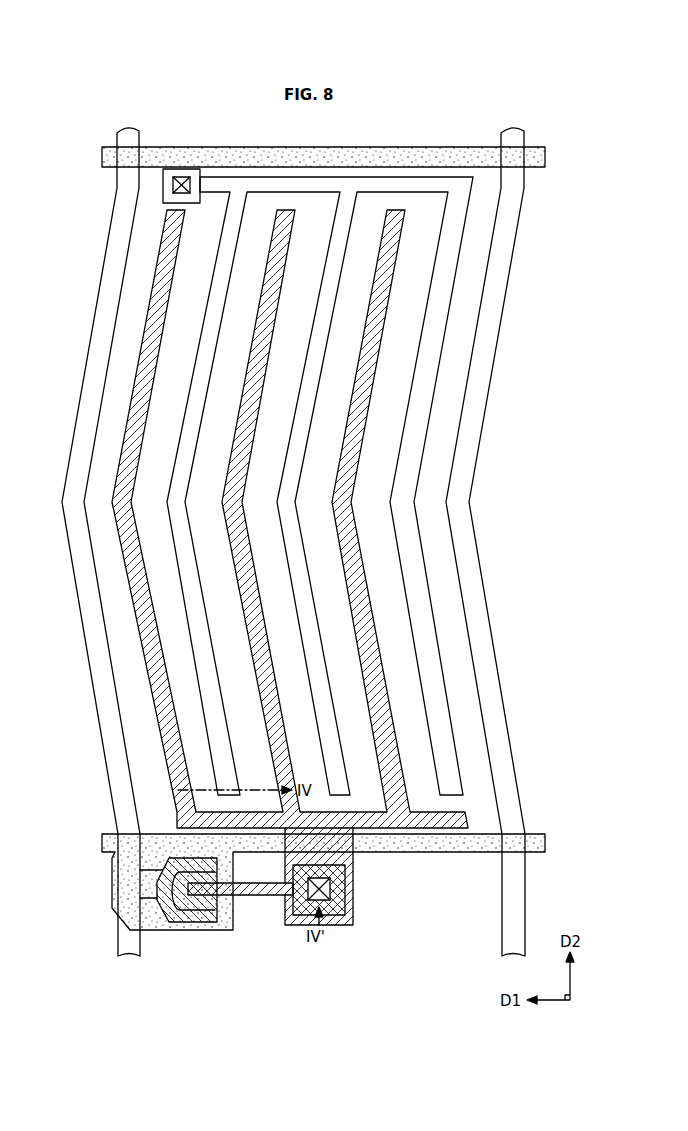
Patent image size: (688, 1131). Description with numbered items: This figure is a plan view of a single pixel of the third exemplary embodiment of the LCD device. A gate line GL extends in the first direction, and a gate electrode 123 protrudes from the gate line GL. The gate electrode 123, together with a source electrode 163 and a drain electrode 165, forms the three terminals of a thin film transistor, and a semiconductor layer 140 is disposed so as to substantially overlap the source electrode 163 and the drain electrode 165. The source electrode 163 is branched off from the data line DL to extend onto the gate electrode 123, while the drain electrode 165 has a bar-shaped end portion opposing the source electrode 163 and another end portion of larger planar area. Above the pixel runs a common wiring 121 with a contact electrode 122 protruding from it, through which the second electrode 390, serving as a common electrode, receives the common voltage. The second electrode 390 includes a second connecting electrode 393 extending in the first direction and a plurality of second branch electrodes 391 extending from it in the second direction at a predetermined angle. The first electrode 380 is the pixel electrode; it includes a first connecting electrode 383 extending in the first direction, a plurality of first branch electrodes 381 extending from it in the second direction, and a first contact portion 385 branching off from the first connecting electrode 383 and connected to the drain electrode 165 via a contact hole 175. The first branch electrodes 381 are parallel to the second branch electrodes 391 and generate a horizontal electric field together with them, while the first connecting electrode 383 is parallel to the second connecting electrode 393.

The common wiring 121 is at (102, 156).
The contact electrode 122 is at (163, 186).
The gate electrode 123 is at (112, 885).
The semiconductor layer 140 is at (187, 914).
The source electrode 163 is at (166, 869).
The drain electrode 165 is at (204, 903).
The contact hole 175 is at (332, 926).
The first electrode 380 is at (371, 567).
The first branch electrodes 381 is at (395, 738).
The first connecting electrode 383 is at (448, 818).
The first contact portion 385 is at (355, 878).
The second electrode 390 is at (388, 486).
The second branch electrodes 391 is at (447, 237).
The second connecting electrode 393 is at (435, 185).
The data line DL is at (90, 602).
The gate line GL is at (300, 882).